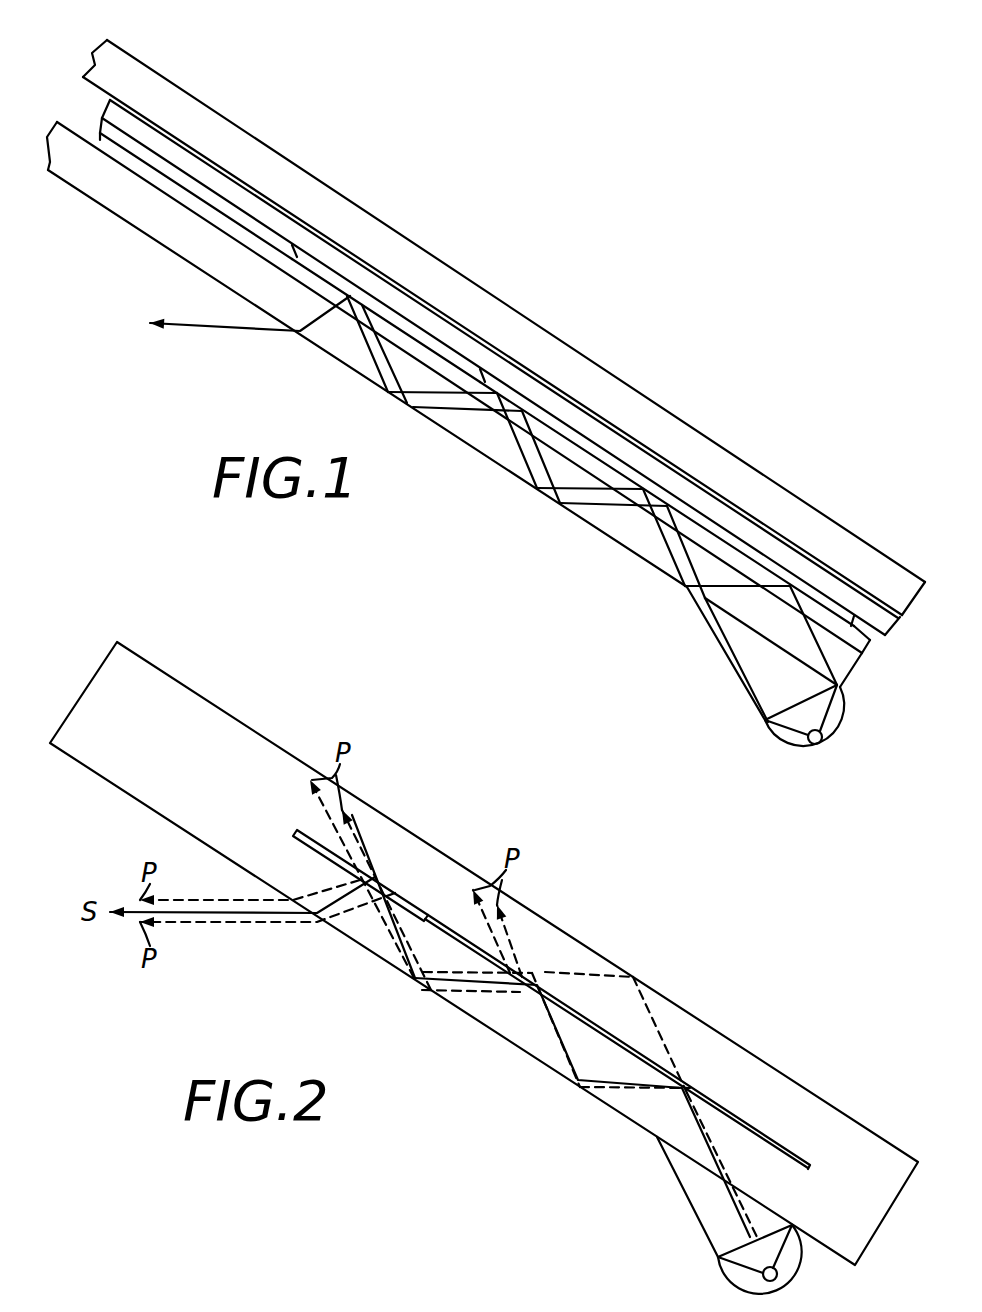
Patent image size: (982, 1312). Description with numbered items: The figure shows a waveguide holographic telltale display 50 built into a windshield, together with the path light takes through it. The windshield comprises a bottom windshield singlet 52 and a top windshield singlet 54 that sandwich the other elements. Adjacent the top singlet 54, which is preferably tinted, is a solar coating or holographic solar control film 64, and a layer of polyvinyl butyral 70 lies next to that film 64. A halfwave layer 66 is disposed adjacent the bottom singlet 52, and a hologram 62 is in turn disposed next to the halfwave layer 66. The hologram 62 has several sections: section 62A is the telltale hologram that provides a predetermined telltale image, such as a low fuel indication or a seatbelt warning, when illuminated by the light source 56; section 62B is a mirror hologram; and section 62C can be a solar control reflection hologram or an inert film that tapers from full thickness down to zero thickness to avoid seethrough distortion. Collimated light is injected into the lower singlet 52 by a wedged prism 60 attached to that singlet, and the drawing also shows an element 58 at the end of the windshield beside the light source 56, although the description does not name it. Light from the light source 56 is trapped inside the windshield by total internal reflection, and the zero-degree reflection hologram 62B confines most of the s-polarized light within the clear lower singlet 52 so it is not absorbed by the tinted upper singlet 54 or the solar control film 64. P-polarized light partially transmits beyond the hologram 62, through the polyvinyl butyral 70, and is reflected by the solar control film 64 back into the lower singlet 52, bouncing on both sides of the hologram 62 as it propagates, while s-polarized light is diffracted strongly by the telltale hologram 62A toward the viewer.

In FIG. 1, the waveguide holographic telltale display 50 is at (527, 222).
In FIG. 1, the bottom windshield singlet 52 is at (130, 210).
In FIG. 1, the top windshield singlet 54 is at (293, 182).
In FIG. 1, the light source 56 is at (822, 736).
In FIG. 1, the reflector 58 is at (775, 743).
In FIG. 1, the wedged prism 60 is at (732, 662).
In FIG. 1, the hologram 62 is at (102, 120).
In FIG. 1, the telltale hologram 62A is at (377, 310).
In FIG. 2, the telltale hologram 62A is at (387, 882).
In FIG. 1, the mirror hologram 62B is at (565, 428).
In FIG. 2, the mirror hologram 62B is at (705, 1092).
In FIG. 1, the solar control reflection hologram 62C is at (150, 158).
In FIG. 1, the holographic solar control film 64 is at (198, 158).
In FIG. 1, the halfwave layer 66 is at (97, 140).
In FIG. 1, the layer of polyvinyl butyral 70 is at (430, 325).